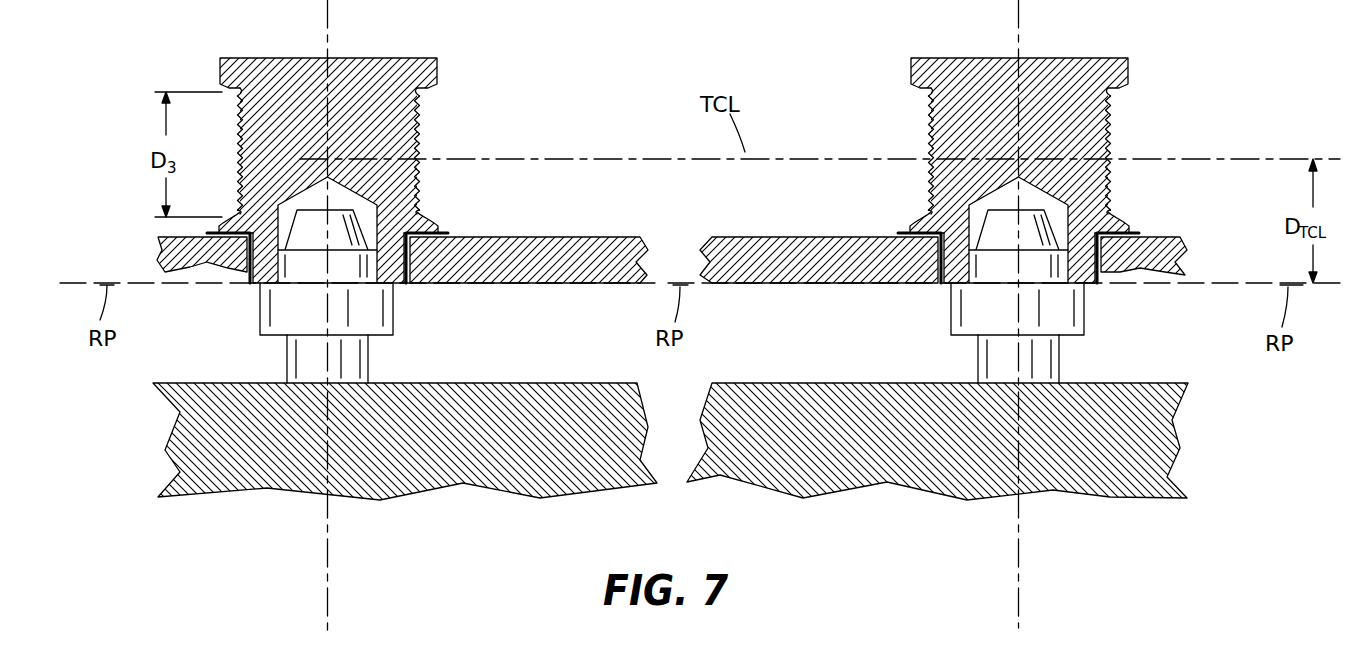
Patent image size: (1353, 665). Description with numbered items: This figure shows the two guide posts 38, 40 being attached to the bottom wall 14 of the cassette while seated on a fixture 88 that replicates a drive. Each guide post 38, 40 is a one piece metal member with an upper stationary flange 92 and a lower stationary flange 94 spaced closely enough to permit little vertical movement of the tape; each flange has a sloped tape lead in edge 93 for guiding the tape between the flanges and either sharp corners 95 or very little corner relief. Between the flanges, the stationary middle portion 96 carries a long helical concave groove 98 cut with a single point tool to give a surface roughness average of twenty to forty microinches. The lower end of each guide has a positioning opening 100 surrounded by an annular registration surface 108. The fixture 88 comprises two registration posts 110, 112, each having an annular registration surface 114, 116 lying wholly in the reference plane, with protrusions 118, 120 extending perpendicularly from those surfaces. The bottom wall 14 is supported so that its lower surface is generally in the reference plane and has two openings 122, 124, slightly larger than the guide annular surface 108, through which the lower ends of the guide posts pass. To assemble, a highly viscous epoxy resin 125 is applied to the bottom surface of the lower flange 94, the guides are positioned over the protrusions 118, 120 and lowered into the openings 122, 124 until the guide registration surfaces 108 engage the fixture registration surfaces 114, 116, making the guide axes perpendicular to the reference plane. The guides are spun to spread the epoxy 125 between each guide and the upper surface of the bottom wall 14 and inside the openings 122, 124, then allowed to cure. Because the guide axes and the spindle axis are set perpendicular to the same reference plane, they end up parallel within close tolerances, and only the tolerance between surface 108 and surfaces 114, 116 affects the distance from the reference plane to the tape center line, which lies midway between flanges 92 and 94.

The bottom wall 14 is at (548, 270).
The guide post 38 is at (933, 76).
The guide post 40 is at (276, 60).
The fixture 88 is at (180, 413).
The upper stationary flange 92 is at (437, 62).
The sloped tape lead in edge 93 is at (430, 228).
The lower stationary flange 94 is at (440, 235).
The sharp corners 95 is at (420, 98).
The middle portion 96 is at (262, 125).
The helical concave groove 98 is at (710, 141).
The positioning opening 100 is at (338, 200).
The annular registration surface 108 is at (272, 292).
The registration post 110 is at (1067, 323).
The registration post 112 is at (382, 322).
The annular registration surface 114 is at (1033, 277).
The annular registration surface 116 is at (348, 276).
The protrusion 118 is at (990, 232).
The protrusion 120 is at (300, 225).
The opening 122 is at (940, 288).
The opening 124 is at (410, 284).
The epoxy resin 125 is at (615, 255).